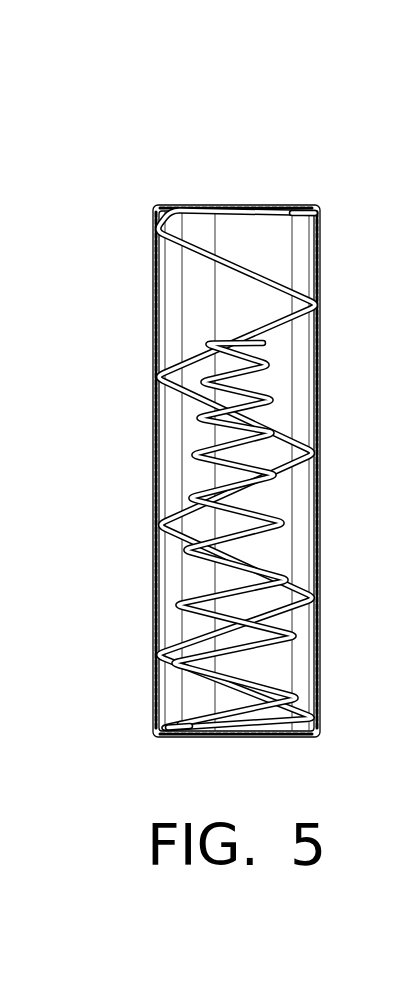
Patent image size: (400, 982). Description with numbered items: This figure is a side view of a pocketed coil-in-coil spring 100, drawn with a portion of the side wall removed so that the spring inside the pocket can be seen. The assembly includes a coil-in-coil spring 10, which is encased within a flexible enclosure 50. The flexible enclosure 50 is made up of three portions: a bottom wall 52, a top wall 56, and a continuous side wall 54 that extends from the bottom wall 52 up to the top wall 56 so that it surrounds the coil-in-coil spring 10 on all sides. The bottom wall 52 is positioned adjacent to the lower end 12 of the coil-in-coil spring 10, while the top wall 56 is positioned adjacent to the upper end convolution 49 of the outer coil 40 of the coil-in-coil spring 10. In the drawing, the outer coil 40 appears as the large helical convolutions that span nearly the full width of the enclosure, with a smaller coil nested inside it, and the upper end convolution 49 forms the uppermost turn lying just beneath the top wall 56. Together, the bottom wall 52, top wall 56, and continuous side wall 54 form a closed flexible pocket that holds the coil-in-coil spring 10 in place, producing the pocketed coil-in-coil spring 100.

The pocketed coil-in-coil spring 100 is at (138, 146).
The coil-in-coil spring 10 is at (197, 263).
The outer coil 40 is at (161, 516).
The upper end convolution 49 is at (183, 206).
The lower end 12 is at (173, 735).
The flexible enclosure 50 is at (152, 287).
The bottom wall 52 is at (270, 738).
The continuous side wall 54 is at (318, 320).
The top wall 56 is at (256, 206).